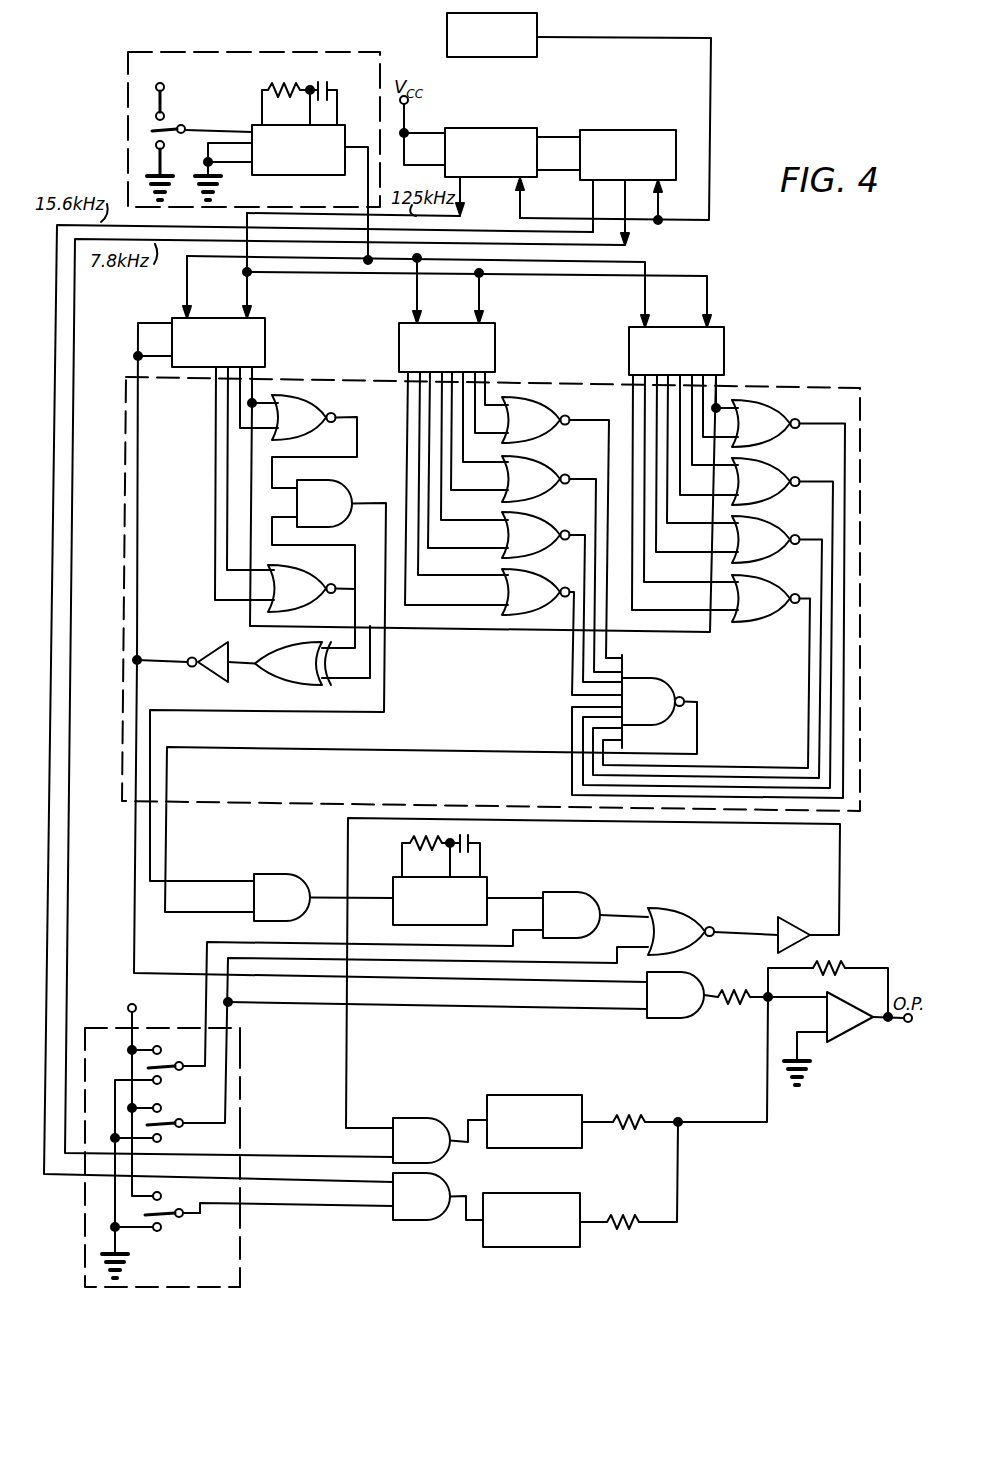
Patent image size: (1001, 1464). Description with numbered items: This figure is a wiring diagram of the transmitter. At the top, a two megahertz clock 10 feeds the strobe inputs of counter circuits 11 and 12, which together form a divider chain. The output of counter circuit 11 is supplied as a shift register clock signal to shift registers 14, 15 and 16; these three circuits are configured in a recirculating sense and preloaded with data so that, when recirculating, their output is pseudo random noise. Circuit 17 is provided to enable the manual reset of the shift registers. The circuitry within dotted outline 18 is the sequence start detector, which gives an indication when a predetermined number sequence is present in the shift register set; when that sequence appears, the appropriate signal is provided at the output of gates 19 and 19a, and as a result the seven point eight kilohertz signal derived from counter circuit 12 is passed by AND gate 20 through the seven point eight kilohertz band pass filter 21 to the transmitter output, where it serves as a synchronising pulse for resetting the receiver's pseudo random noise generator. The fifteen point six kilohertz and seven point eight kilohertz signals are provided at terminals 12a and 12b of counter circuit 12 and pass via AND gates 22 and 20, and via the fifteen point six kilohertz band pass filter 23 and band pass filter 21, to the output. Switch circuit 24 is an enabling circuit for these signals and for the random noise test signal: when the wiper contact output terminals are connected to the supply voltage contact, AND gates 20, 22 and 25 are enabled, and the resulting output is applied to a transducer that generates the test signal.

The 2 MHz clock 10 is at (542, 25).
The counter circuit 11 is at (540, 127).
The counter circuit 12 is at (676, 130).
The terminal 12a is at (593, 188).
The terminal 12b is at (628, 188).
The shift register 14 is at (266, 335).
The shift register 15 is at (496, 341).
The shift register 16 is at (725, 346).
The reset circuit 17 is at (346, 55).
The dotted outline 18 is at (858, 391).
The gate 19 is at (672, 684).
The gate 19a is at (312, 862).
The AND gate 20 is at (449, 1110).
The 7.8 kHz band pass filter 21 is at (593, 1082).
The AND gate 22 is at (446, 1181).
The 15.6 kHz band pass filter 23 is at (593, 1180).
The switch circuit 24 is at (243, 1052).
The AND gate 25 is at (690, 1018).